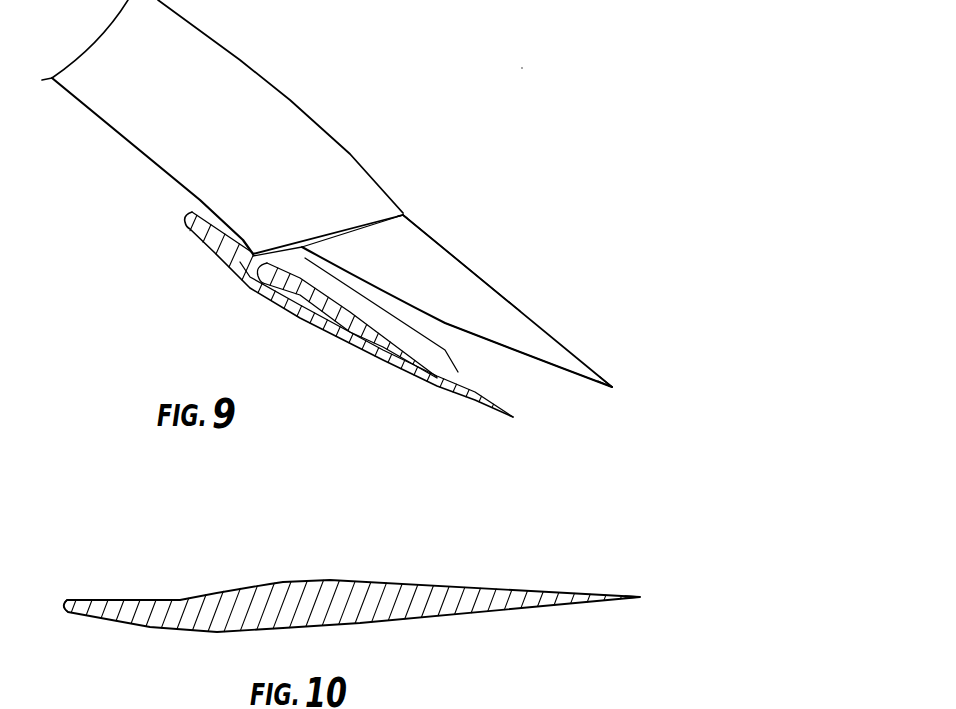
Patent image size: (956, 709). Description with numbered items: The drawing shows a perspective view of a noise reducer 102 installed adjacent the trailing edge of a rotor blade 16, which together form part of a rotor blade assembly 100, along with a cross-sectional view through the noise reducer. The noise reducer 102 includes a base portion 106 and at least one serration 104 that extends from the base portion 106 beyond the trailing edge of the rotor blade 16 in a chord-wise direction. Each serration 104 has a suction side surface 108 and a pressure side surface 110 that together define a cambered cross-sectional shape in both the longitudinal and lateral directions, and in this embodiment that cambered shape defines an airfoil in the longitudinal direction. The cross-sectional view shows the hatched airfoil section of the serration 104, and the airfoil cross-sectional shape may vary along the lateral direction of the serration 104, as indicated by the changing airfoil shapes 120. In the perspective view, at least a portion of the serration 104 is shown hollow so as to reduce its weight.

In FIG. 9, the rotor blade 16 is at (295, 100).
In FIG. 9, the rotor blade assembly 100 is at (522, 68).
In FIG. 9, the noise reducer 102 is at (565, 242).
In FIG. 10, the noise reducer 102 is at (658, 595).
In FIG. 9, the serration 104 is at (453, 252).
In FIG. 10, the serration 104 is at (490, 585).
In FIG. 9, the base portion 106 is at (403, 213).
In FIG. 10, the base portion 106 is at (137, 598).
In FIG. 9, the suction side surface 108 is at (517, 322).
In FIG. 9, the pressure side surface 110 is at (340, 340).
In FIG. 10, the changing airfoil shapes 120 is at (350, 618).